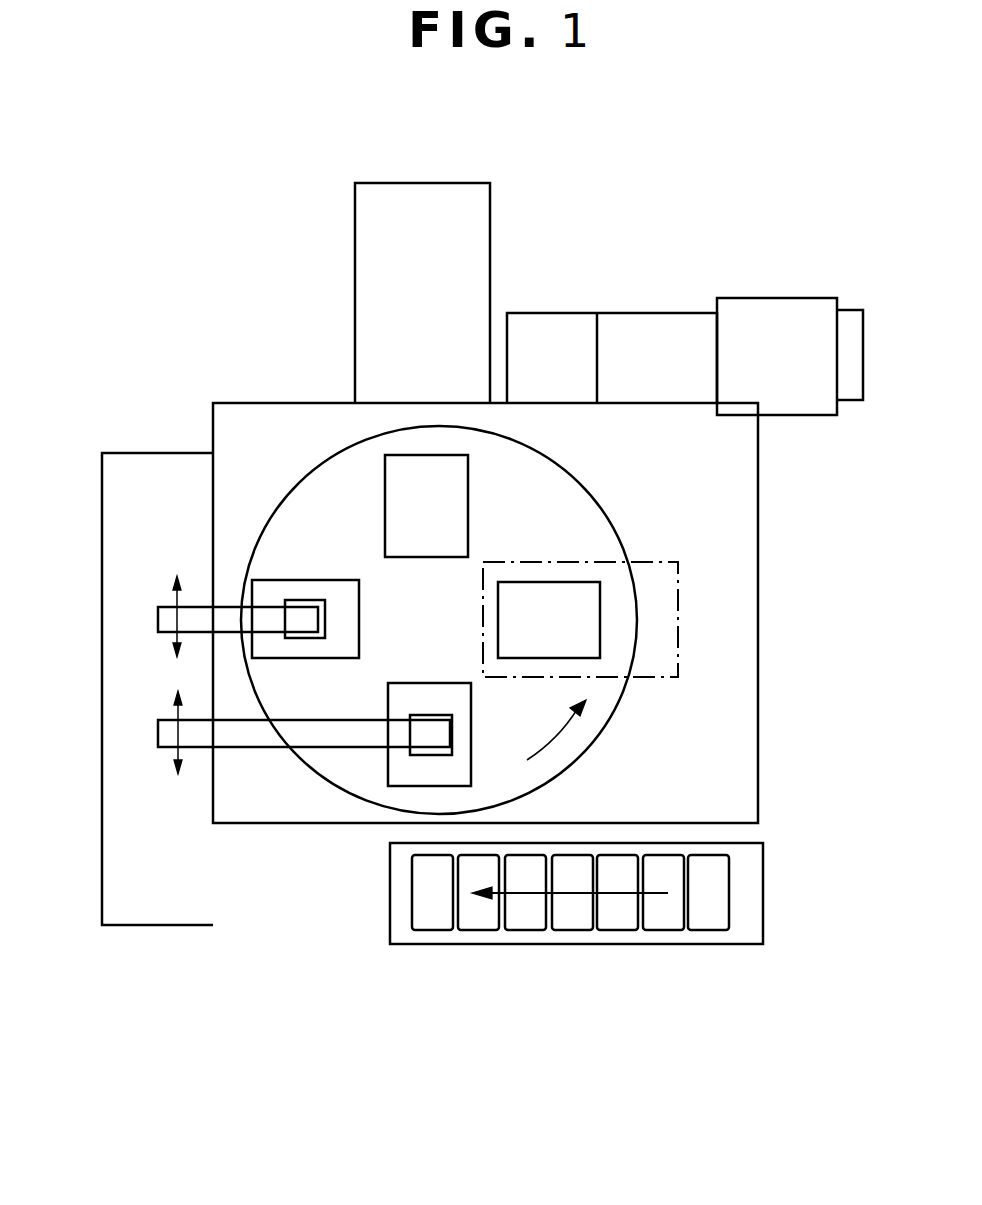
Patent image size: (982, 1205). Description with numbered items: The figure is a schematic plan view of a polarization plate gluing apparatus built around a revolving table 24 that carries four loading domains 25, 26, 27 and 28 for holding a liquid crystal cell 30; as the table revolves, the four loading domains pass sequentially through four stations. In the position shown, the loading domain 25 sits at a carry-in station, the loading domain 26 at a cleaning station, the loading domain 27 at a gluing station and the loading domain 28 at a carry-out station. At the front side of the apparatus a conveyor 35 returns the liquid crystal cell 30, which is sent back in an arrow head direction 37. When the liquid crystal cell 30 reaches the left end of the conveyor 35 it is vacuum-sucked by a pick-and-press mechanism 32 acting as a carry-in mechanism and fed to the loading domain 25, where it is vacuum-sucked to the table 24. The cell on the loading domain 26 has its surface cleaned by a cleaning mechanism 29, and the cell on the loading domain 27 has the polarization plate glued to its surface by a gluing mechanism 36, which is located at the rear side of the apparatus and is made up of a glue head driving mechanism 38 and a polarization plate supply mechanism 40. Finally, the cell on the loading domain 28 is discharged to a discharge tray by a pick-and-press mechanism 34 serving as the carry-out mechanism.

The revolving table 24 is at (597, 498).
The loading domain 25 is at (433, 683).
The loading domain 26 is at (566, 637).
The loading domain 27 is at (448, 517).
The loading domain 28 is at (322, 580).
The cleaning mechanism 29 is at (678, 620).
The liquid crystal cell 30 is at (412, 897).
The pick-and-press mechanism 32 is at (320, 752).
The pick-and-press mechanism 34 is at (200, 605).
The conveyor 35 is at (488, 944).
The gluing mechanism 36 is at (567, 160).
The arrow head direction 37 is at (575, 900).
The glue head driving mechanism 38 is at (490, 224).
The polarization plate supply mechanism 40 is at (688, 312).